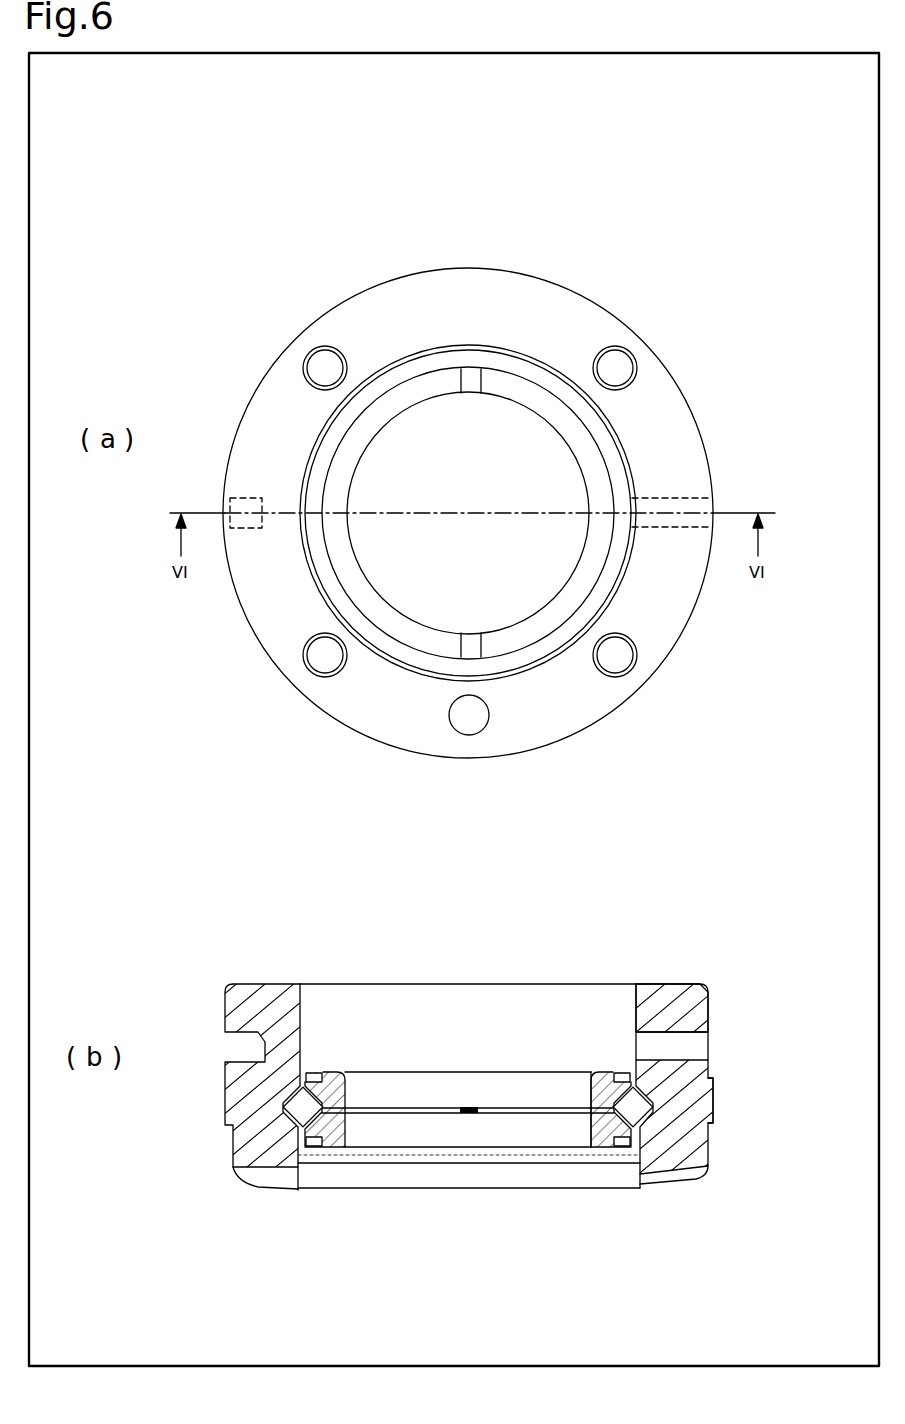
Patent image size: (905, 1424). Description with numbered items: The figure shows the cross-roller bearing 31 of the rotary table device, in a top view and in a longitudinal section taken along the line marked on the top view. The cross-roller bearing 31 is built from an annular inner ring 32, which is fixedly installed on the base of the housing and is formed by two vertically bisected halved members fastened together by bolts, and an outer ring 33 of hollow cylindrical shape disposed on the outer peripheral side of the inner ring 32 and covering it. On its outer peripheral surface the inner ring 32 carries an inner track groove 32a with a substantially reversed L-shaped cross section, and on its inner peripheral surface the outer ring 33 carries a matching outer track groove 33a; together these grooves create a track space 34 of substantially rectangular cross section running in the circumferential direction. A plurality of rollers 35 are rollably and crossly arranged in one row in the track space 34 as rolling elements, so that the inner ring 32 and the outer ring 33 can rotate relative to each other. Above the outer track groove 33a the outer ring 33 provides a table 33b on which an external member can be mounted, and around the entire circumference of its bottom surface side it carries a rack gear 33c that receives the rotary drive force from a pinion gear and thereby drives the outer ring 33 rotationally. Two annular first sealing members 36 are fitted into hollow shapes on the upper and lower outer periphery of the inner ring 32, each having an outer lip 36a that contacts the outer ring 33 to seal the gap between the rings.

The cross-roller bearing 31 is at (328, 273).
The inner ring 32 is at (415, 633).
The inner track groove 32a is at (620, 1135).
The outer ring 33 is at (543, 305).
The outer track groove 33a is at (716, 1094).
The table 33b is at (668, 984).
The rack gear 33c is at (675, 1180).
The track space 34 is at (648, 1140).
The rollers 35 is at (250, 1182).
The first sealing member 36 is at (306, 1090).
The outer lip 36a is at (313, 1073).